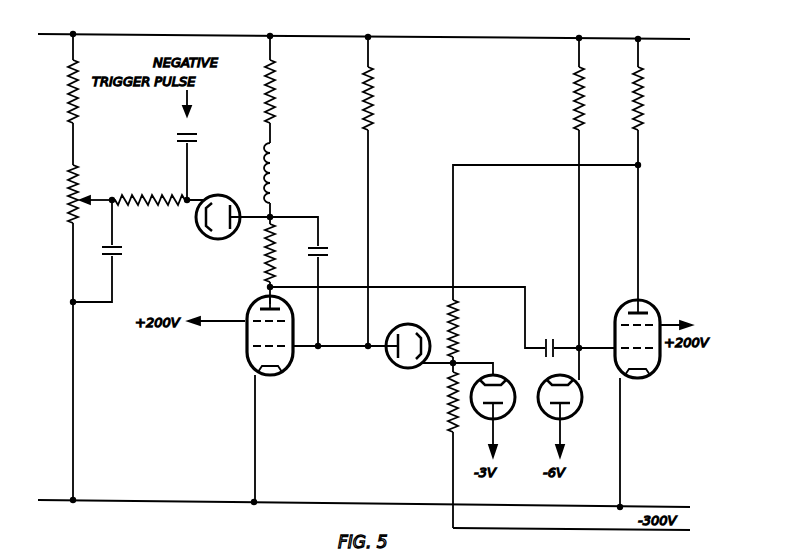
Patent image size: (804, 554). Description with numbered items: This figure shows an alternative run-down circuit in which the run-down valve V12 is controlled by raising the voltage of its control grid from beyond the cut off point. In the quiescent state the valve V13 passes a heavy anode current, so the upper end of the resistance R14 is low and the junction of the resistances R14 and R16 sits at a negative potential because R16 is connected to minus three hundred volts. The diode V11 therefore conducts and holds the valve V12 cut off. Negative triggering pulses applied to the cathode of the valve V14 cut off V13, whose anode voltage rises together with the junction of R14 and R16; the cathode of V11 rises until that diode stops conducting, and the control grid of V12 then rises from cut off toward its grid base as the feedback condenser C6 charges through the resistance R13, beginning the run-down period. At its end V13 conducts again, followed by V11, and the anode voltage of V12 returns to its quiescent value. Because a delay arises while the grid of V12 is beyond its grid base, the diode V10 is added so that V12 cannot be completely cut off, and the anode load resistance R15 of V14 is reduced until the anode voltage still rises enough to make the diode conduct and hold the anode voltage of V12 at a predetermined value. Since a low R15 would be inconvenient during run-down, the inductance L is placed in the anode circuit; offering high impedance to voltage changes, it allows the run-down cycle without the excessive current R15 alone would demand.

The triggering valve V14 is at (228, 208).
The anode load resistance R15 is at (286, 89).
The inductance L is at (277, 183).
The feedback condenser C6 is at (310, 281).
The charging resistance R13 is at (384, 191).
The run-down valve V12 is at (287, 393).
The diode V11 is at (419, 340).
The resistance R14 is at (469, 336).
The resistance R16 is at (431, 450).
The diode V10 is at (517, 410).
The valve V13 is at (653, 395).